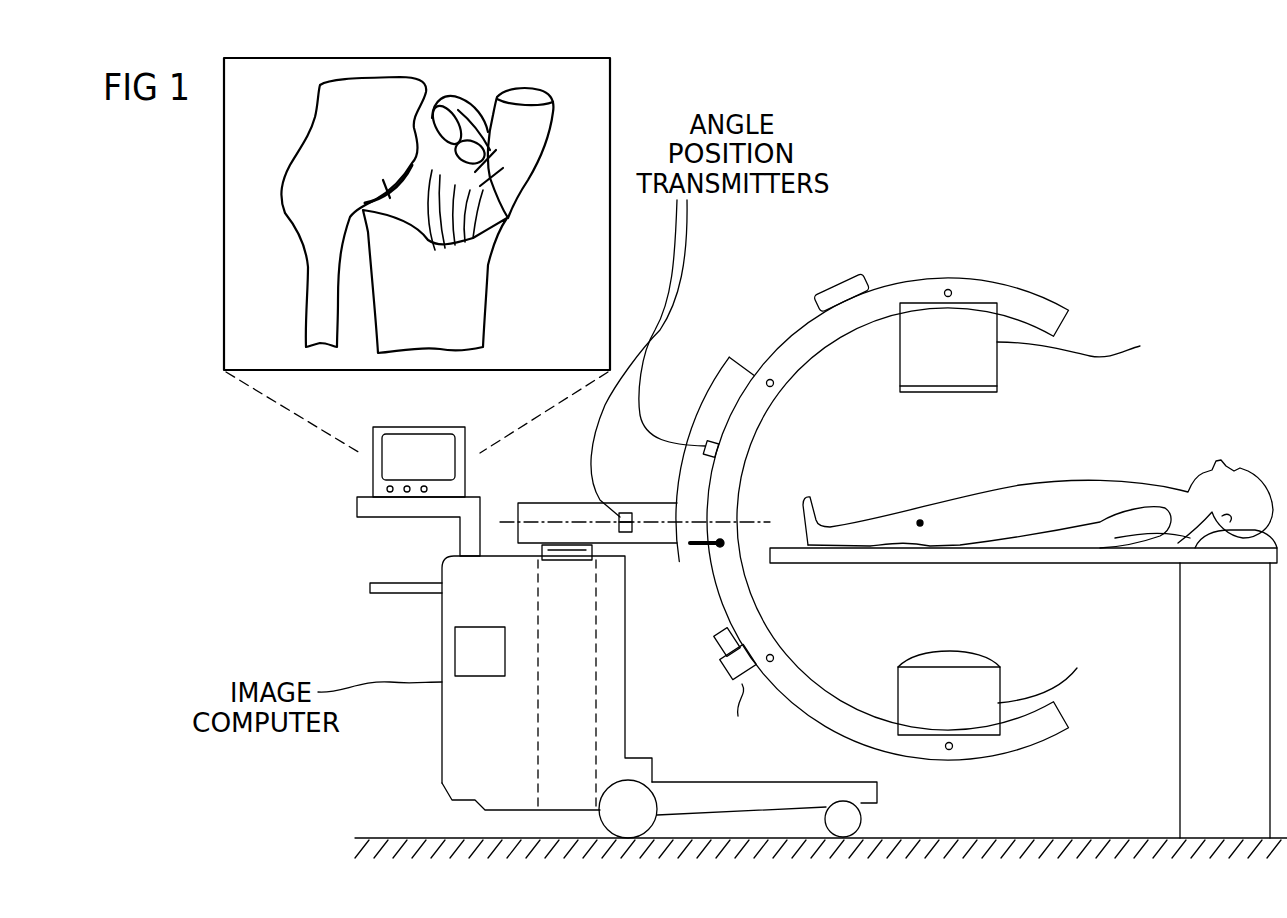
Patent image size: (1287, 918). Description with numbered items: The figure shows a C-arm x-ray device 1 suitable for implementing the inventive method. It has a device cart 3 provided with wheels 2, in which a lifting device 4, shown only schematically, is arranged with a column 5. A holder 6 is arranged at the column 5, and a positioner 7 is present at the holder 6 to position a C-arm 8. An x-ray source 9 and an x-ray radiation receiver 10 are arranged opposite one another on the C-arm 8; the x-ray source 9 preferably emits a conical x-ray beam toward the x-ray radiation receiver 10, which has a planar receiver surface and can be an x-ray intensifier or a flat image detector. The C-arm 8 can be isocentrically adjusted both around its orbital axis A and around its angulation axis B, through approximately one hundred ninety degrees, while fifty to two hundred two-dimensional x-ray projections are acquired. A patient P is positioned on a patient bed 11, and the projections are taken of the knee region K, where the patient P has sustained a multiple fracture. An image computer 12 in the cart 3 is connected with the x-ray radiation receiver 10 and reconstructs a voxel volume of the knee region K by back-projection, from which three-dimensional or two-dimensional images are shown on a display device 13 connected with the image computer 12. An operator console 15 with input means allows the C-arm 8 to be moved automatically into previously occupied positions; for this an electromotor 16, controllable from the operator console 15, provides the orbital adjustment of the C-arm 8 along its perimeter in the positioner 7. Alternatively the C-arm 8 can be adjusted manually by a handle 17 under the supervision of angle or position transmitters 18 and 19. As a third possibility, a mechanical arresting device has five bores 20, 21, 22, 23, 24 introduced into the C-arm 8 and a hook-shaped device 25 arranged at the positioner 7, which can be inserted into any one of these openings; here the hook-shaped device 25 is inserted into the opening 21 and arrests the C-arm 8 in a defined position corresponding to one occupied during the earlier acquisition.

The C-arm x-ray device 1 is at (960, 513).
The wheels 2 is at (633, 790).
The device cart 3 is at (442, 712).
The lifting device 4 is at (545, 745).
The column 5 is at (548, 560).
The holder 6 is at (554, 505).
The positioner 7 is at (715, 390).
The C-arm 8 is at (790, 347).
The x-ray source 9 is at (998, 682).
The x-ray radiation receiver 10 is at (997, 360).
The patient bed 11 is at (1043, 564).
The image computer 12 is at (455, 645).
The display device 13 is at (373, 484).
The operator console 15 is at (373, 594).
The electromotor 16 is at (716, 668).
The handle 17 is at (836, 284).
The angle or position transmitter 18 is at (704, 447).
The angle or position transmitter 19 is at (623, 513).
The bore 20 is at (948, 289).
The bore 21 is at (772, 387).
The bore 22 is at (722, 545).
The bore 23 is at (771, 654).
The bore 24 is at (950, 750).
The hook-shaped device 25 is at (716, 548).
The orbital axis A is at (920, 527).
The angulation axis B is at (765, 518).
The knee region K is at (882, 504).
The patient P is at (1126, 481).